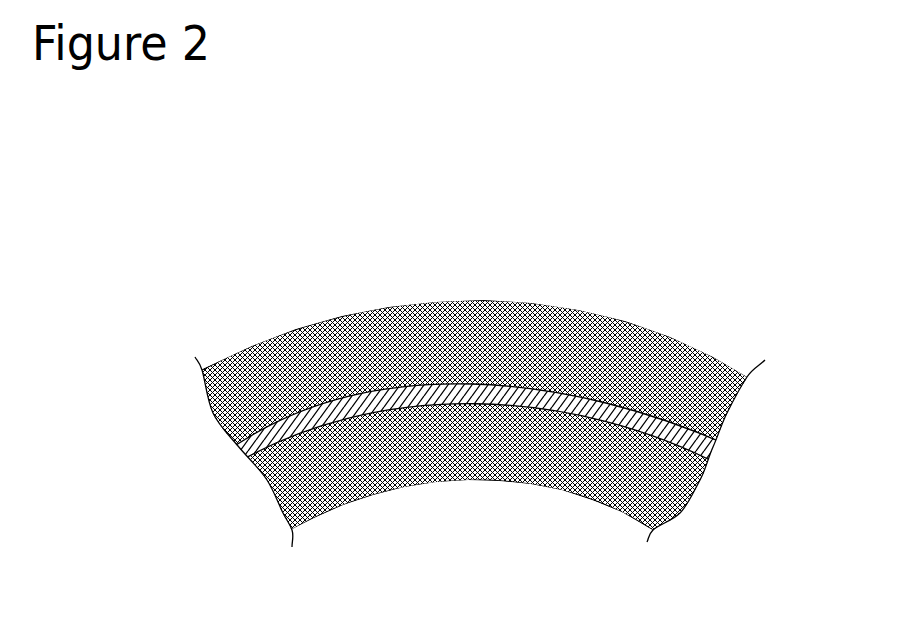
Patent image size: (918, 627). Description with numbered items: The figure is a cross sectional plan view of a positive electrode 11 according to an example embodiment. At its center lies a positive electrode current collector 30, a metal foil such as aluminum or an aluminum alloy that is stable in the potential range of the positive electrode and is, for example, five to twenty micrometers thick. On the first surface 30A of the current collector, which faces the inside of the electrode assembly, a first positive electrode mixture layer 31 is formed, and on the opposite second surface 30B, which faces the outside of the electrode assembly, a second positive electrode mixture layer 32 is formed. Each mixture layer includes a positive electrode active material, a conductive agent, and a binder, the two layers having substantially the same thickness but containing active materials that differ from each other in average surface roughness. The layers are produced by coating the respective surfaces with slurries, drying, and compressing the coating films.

The positive electrode 11 is at (485, 375).
The positive electrode current collector 30 is at (325, 415).
The first surface 30A is at (678, 466).
The second surface 30B is at (688, 413).
The positive electrode mixture layer 31 is at (452, 470).
The positive electrode mixture layer 32 is at (557, 318).